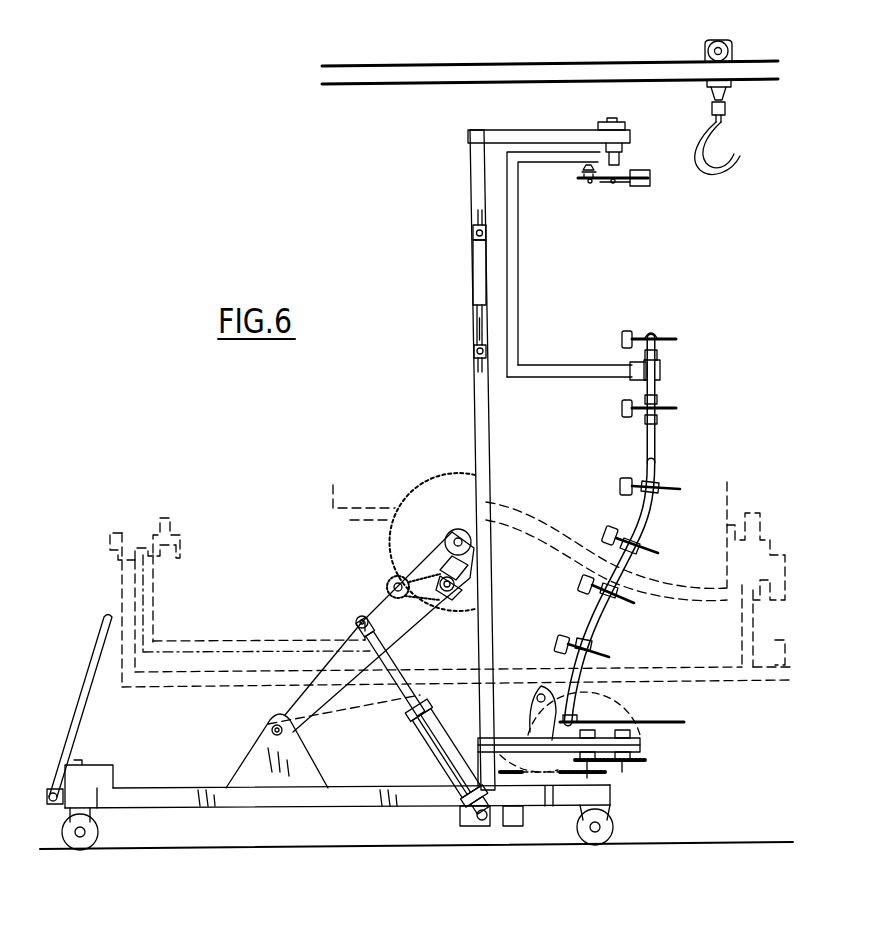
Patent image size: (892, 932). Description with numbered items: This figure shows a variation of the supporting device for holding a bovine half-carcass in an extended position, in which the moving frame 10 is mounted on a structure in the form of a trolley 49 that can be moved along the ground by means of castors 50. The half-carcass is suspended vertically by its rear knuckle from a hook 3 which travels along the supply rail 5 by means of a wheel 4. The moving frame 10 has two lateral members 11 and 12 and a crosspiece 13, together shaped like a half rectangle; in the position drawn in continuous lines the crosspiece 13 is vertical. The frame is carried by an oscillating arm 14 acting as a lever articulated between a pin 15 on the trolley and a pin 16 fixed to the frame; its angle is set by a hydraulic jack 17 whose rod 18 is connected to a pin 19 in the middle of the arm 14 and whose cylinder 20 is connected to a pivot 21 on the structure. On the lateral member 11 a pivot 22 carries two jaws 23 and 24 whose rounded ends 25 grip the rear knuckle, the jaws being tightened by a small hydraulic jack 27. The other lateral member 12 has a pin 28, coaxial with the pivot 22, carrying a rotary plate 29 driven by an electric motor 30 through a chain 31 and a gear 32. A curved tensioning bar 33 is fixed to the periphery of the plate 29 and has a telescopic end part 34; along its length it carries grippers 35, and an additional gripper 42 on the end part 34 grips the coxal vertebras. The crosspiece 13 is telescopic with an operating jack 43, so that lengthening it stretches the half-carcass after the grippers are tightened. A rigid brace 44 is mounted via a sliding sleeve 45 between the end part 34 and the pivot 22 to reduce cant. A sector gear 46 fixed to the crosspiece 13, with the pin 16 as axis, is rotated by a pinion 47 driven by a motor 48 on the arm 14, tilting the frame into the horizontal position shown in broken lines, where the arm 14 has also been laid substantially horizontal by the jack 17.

The hook 3 is at (733, 168).
The wheel 4 is at (710, 46).
The supply rail 5 is at (558, 75).
The moving frame 10 is at (460, 378).
The lateral member 11 is at (528, 136).
The lateral member 12 is at (520, 748).
The crosspiece 13 is at (481, 412).
The oscillating arm 14 is at (343, 662).
The pin 15 is at (273, 728).
The pin 16 is at (458, 529).
The hydraulic jack 17 is at (415, 755).
The rod 18 is at (390, 667).
The pin 19 is at (356, 620).
The cylinder 20 is at (452, 774).
The pivot 21 is at (482, 826).
The pivot 22 is at (602, 184).
The jaw 23 is at (618, 186).
The jaw 24 is at (632, 203).
The rounded ends 25 is at (651, 180).
The small hydraulic jack 27 is at (586, 165).
The pin 28 is at (622, 766).
The rotary plate 29 is at (666, 724).
The electric motor 30 is at (516, 826).
The chain 31 is at (553, 776).
The gear 32 is at (600, 774).
The tensioning bar 33 is at (642, 519).
The end part 34 is at (657, 386).
The grippers 35 is at (660, 494).
The gripper 42 is at (667, 340).
The operating jack 43 is at (477, 265).
The rigid brace 44 is at (512, 265).
The sliding sleeve 45 is at (660, 368).
The sector gear 46 is at (419, 484).
The pinion 47 is at (387, 584).
The motor 48 is at (460, 573).
The trolley 49 is at (311, 790).
The castors 50 is at (88, 838).